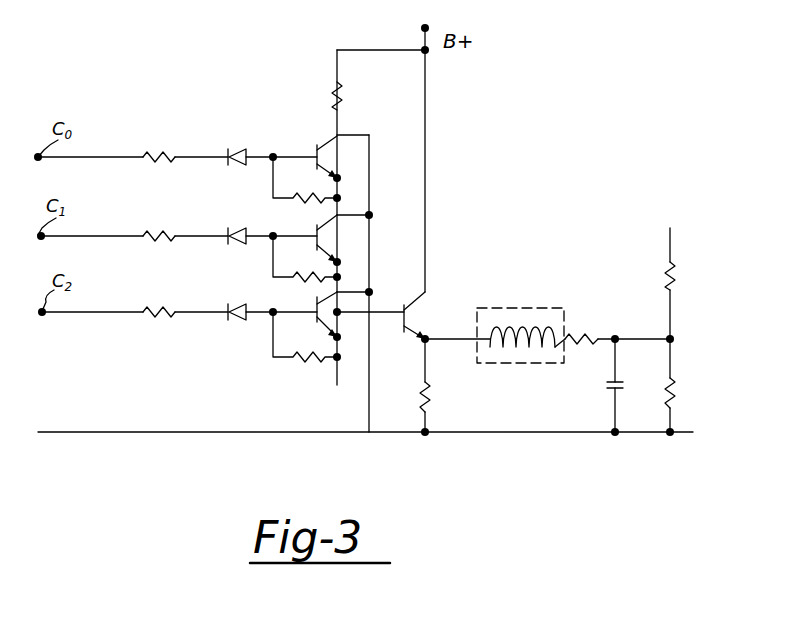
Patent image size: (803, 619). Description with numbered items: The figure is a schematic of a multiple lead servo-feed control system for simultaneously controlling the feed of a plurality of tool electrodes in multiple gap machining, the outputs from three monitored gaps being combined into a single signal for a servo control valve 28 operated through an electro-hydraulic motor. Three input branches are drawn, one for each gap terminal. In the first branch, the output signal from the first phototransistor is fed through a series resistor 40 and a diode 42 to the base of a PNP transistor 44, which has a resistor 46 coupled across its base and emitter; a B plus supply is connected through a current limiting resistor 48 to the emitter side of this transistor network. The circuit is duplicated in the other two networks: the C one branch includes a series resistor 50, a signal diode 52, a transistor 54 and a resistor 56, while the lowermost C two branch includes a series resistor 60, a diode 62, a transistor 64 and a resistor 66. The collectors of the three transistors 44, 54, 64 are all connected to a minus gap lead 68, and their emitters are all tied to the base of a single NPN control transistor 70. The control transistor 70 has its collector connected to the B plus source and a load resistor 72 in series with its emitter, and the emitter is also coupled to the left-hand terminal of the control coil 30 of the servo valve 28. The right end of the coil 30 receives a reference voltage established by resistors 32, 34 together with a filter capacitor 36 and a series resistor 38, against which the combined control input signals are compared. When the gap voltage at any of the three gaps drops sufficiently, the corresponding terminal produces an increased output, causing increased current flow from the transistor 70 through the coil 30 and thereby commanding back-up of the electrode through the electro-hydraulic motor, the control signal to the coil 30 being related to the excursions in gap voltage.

The servo control valve 28 is at (557, 308).
The control coil 30 is at (506, 332).
The resistor 32 is at (676, 282).
The resistor 34 is at (678, 394).
The filter capacitor 36 is at (606, 390).
The series resistor 38 is at (590, 334).
The series resistor 40 is at (178, 130).
The diode 42 is at (244, 148).
The PNP transistor 44 is at (312, 126).
The resistor 46 is at (308, 182).
The resistor 48 is at (335, 92).
The series resistor 50 is at (178, 210).
The signal diode 52 is at (240, 226).
The transistor 54 is at (312, 232).
The resistor 56 is at (310, 258).
The series resistor 60 is at (157, 320).
The diode 62 is at (240, 322).
The transistor 64 is at (305, 302).
The resistor 66 is at (301, 360).
The minus gap lead 68 is at (187, 434).
The control transistor 70 is at (404, 302).
The load resistor 72 is at (432, 390).